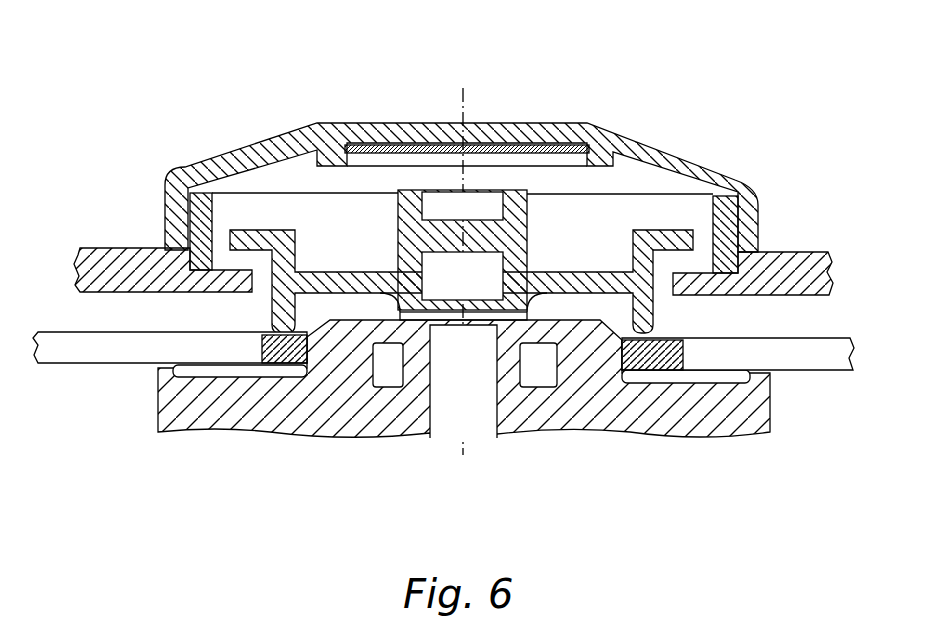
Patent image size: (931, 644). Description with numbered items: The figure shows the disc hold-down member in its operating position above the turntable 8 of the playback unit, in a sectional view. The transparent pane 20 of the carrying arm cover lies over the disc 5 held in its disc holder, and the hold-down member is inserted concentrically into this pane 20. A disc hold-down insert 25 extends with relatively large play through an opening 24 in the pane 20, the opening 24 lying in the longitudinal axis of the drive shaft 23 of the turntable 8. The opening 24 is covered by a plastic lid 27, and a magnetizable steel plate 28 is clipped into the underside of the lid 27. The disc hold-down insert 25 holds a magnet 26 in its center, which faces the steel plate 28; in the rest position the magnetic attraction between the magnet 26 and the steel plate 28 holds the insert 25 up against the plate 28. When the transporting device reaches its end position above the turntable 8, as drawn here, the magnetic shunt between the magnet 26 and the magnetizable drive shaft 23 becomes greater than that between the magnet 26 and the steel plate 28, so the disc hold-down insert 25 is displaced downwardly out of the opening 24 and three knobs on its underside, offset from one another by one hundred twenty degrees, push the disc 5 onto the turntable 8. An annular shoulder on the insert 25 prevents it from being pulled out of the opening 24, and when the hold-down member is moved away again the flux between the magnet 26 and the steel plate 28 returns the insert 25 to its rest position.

The disc 5 is at (98, 352).
The turntable 8 is at (287, 432).
The transparent pane 20 is at (798, 258).
The drive shaft 23 is at (477, 418).
The opening 24 is at (662, 287).
The disc hold-down insert 25 is at (512, 224).
The magnet 26 is at (443, 272).
The lid 27 is at (682, 158).
The steel plate 28 is at (391, 123).